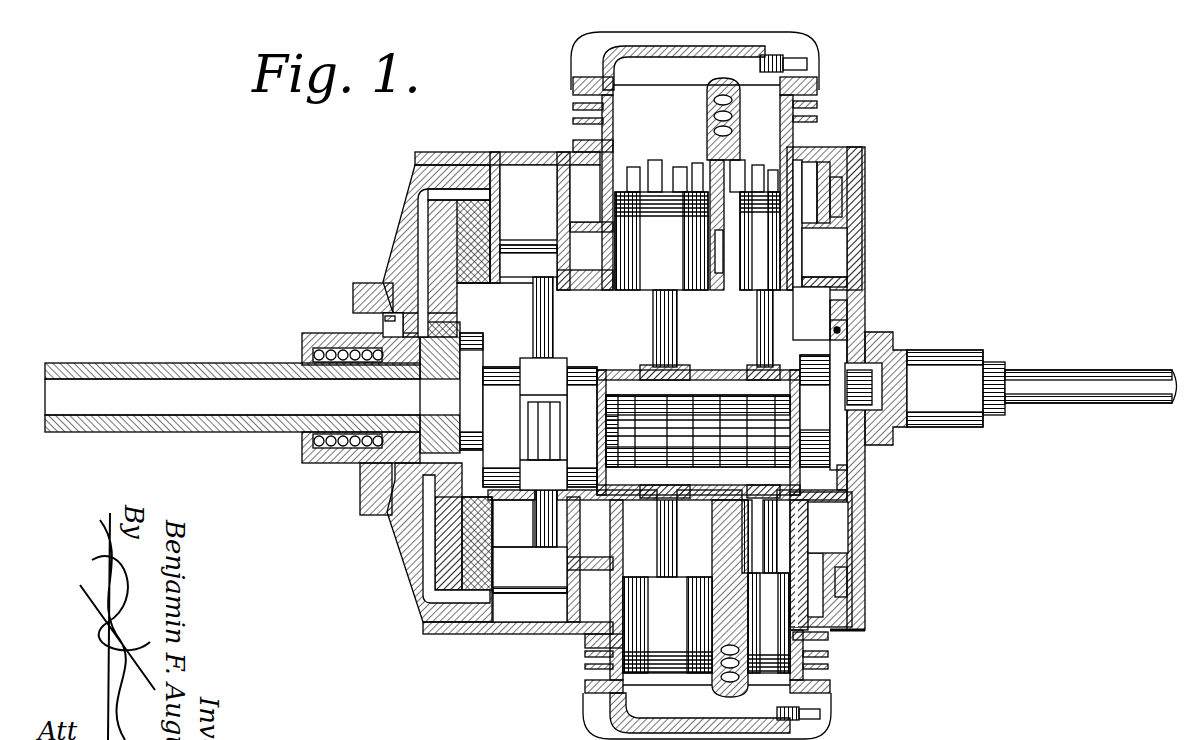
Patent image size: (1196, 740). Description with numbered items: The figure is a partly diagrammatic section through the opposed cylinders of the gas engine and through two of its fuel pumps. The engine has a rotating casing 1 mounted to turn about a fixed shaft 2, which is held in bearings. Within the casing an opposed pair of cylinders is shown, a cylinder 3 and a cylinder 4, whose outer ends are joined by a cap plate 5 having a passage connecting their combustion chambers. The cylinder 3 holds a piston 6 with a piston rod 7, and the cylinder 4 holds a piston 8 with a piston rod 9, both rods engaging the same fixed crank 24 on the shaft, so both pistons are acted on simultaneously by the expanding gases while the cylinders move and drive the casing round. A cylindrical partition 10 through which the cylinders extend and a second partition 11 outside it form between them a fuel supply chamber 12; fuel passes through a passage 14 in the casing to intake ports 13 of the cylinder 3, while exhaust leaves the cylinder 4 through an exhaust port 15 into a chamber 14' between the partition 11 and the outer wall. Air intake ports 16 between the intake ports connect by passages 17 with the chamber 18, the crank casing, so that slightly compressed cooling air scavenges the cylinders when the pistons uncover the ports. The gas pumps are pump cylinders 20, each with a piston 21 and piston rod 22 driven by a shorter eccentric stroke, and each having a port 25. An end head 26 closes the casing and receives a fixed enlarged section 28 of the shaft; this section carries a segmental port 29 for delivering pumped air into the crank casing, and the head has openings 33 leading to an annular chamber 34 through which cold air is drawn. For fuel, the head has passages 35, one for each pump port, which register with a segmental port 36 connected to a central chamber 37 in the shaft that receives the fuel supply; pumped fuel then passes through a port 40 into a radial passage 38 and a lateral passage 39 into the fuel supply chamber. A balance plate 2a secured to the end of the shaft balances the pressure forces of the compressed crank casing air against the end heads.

The rotating casing 1 is at (475, 634).
The fixed shaft 2 is at (184, 428).
The balance plate 2a is at (850, 342).
The cylinder 3 is at (817, 112).
The cylinder 4 is at (550, 141).
The cap plate 5 is at (722, 48).
The piston 6 is at (803, 243).
The piston rod 7 is at (760, 333).
The piston 8 is at (663, 432).
The piston rod 9 is at (668, 333).
The cylindrical partition 10 is at (833, 279).
The second partition 11 is at (912, 225).
The fuel supply chamber 12 is at (826, 257).
The intake ports 13 is at (765, 190).
The passage 14 is at (866, 192).
The exhaust chamber 14' is at (754, 383).
The exhaust port 15 is at (680, 168).
The air intake ports 16 is at (795, 167).
The passages 17 is at (727, 290).
The chamber 18 is at (812, 342).
The pump cylinders 20 is at (530, 658).
The piston 21 is at (545, 275).
The piston rod 22 is at (548, 322).
The fixed crank 24 is at (798, 425).
The port 25 is at (474, 190).
The end head 26 is at (496, 651).
The enlarged section 28 is at (353, 290).
The segmental port 29 is at (393, 313).
The openings 33 is at (362, 468).
The chamber 34 is at (363, 327).
The passages 35 is at (420, 237).
The segmental port 36 is at (462, 322).
The chamber 37 is at (282, 404).
The radial passage 38 is at (427, 538).
The lateral passage 39 is at (493, 530).
The port 40 is at (390, 515).